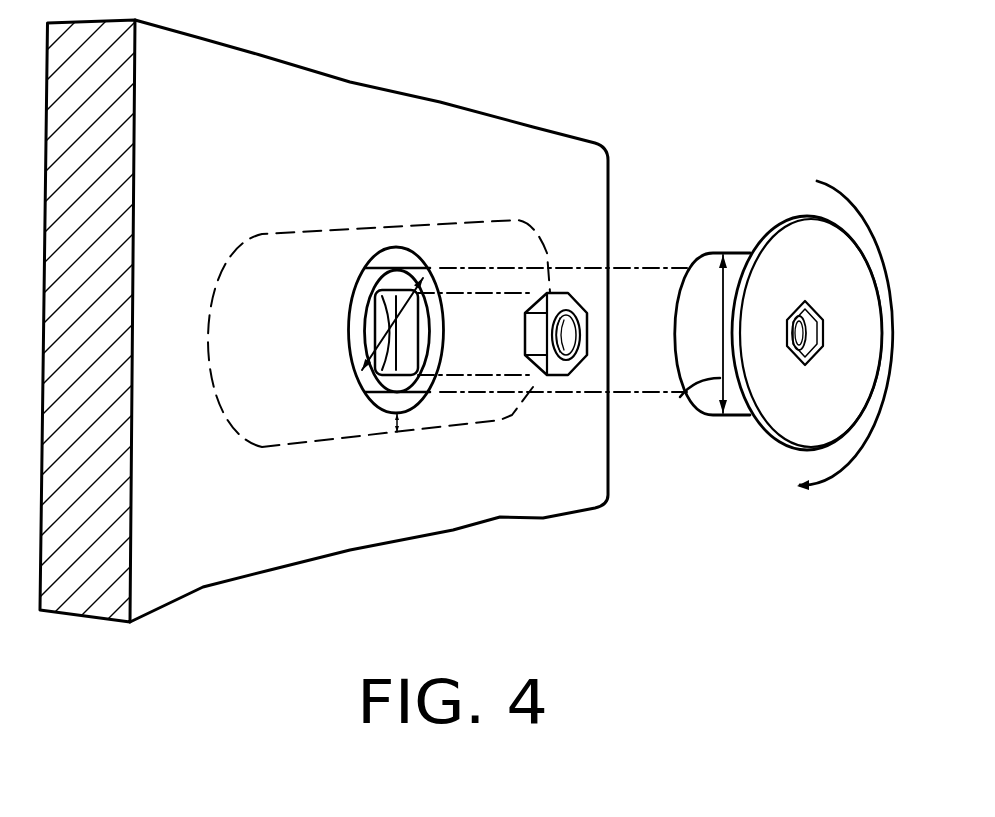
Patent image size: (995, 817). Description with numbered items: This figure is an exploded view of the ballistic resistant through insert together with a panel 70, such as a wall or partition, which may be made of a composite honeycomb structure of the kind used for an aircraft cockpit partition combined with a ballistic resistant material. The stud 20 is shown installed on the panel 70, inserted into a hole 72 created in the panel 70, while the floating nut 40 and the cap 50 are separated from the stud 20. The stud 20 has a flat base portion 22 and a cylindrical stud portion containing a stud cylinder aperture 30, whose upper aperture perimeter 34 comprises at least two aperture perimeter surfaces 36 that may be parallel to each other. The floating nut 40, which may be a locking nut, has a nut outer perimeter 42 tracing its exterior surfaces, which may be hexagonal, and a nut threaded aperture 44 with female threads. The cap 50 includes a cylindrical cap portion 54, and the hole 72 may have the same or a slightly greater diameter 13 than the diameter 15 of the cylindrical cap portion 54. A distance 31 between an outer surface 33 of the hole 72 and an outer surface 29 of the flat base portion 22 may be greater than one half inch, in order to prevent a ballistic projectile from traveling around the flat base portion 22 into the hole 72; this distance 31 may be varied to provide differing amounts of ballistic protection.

The diameter 13 is at (405, 310).
The diameter 15 is at (682, 396).
The stud 20 is at (358, 285).
The flat base portion 22 is at (475, 222).
The outer surface 29 is at (372, 435).
The stud cylinder aperture 30 is at (402, 343).
The distance 31 is at (402, 422).
The outer surface 33 is at (385, 410).
The upper aperture perimeter 34 is at (407, 316).
The aperture perimeter surfaces 36 is at (398, 333).
The floating nut 40 is at (577, 357).
The nut outer perimeter 42 is at (550, 293).
The nut threaded aperture 44 is at (572, 333).
The cap 50 is at (741, 433).
The cylindrical cap portion 54 is at (717, 257).
The panel 70 is at (553, 148).
The hole 72 is at (410, 263).